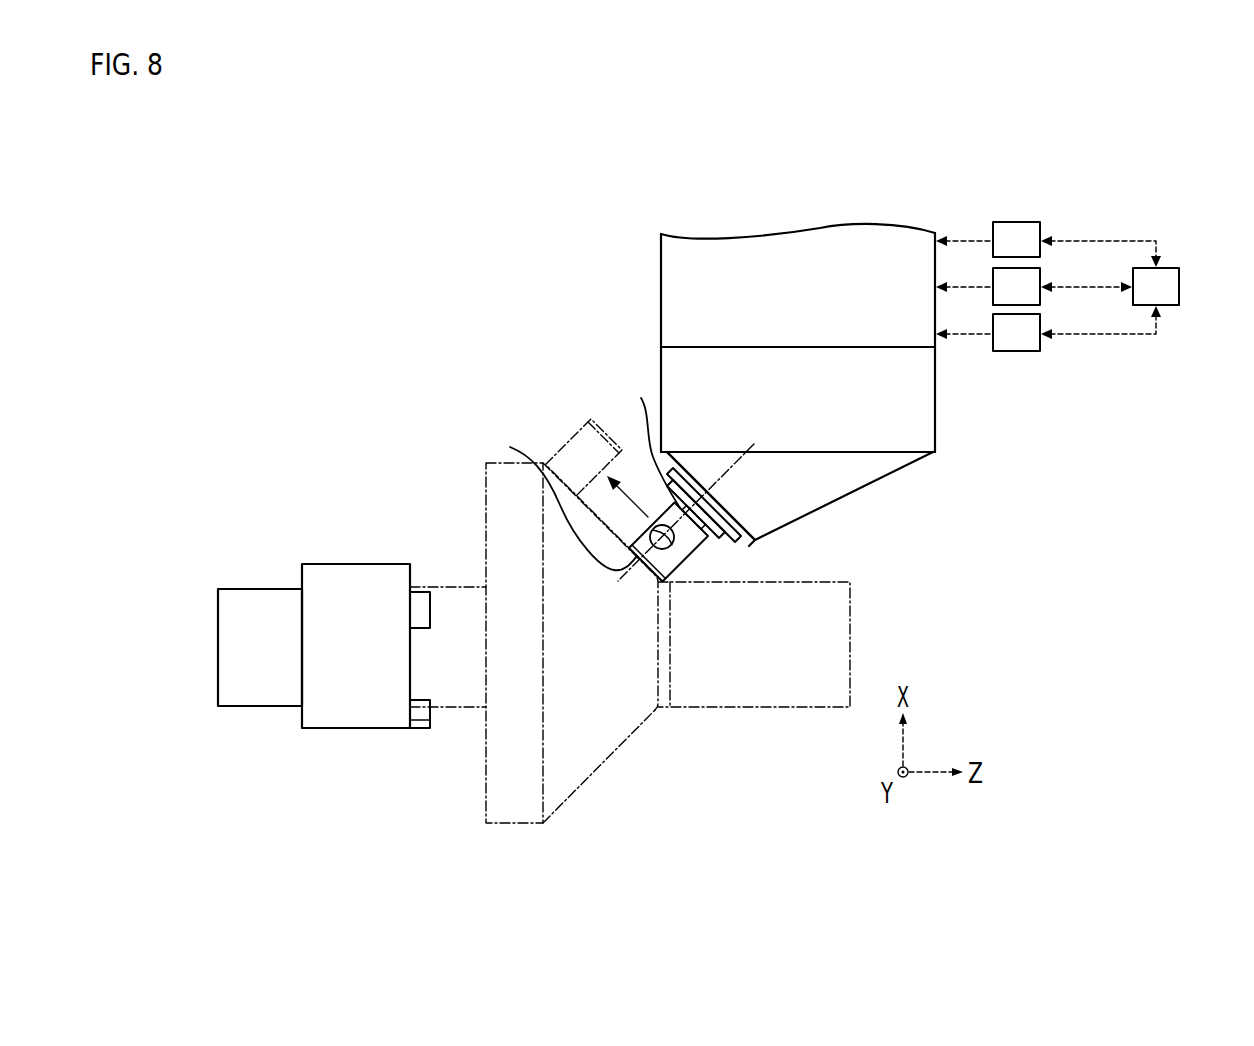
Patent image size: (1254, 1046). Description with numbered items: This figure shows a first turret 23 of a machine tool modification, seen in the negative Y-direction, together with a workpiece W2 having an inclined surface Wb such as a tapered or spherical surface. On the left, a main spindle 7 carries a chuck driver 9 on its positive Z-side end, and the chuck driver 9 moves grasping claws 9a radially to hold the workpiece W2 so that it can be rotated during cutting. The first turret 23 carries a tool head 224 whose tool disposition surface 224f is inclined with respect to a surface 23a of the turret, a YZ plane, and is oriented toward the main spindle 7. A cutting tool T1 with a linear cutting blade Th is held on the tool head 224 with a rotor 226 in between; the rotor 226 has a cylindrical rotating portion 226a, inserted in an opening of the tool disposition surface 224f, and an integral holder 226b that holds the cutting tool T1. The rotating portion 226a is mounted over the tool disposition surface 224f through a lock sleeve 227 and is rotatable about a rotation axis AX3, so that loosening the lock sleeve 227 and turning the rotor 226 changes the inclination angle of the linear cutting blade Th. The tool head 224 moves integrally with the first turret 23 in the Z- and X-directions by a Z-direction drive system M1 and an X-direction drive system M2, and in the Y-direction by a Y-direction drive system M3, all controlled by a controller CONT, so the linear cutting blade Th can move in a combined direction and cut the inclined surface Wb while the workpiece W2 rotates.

The main spindle 7 is at (265, 598).
The chuck driver 9 is at (348, 576).
The grasping claws 9a is at (420, 600).
The first turret 23 is at (672, 268).
The surface of the first turret 23a is at (668, 349).
The tool head 224 is at (922, 413).
The tool disposition surface 224f is at (747, 542).
The rotor 226 is at (639, 362).
The rotating portion 226a is at (595, 468).
The holder 226b is at (597, 420).
The lock sleeve 227 is at (724, 517).
The rotation axis AX3 is at (698, 495).
The cutting tool T1 is at (690, 548).
The linear cutting blade Th is at (569, 624).
The inclined surface Wb is at (624, 741).
The workpiece W2 is at (786, 715).
The Z-direction drive system M1 is at (1048, 244).
The X-direction drive system M2 is at (1034, 286).
The Y-direction drive system M3 is at (1048, 328).
The controller CONT is at (1175, 295).